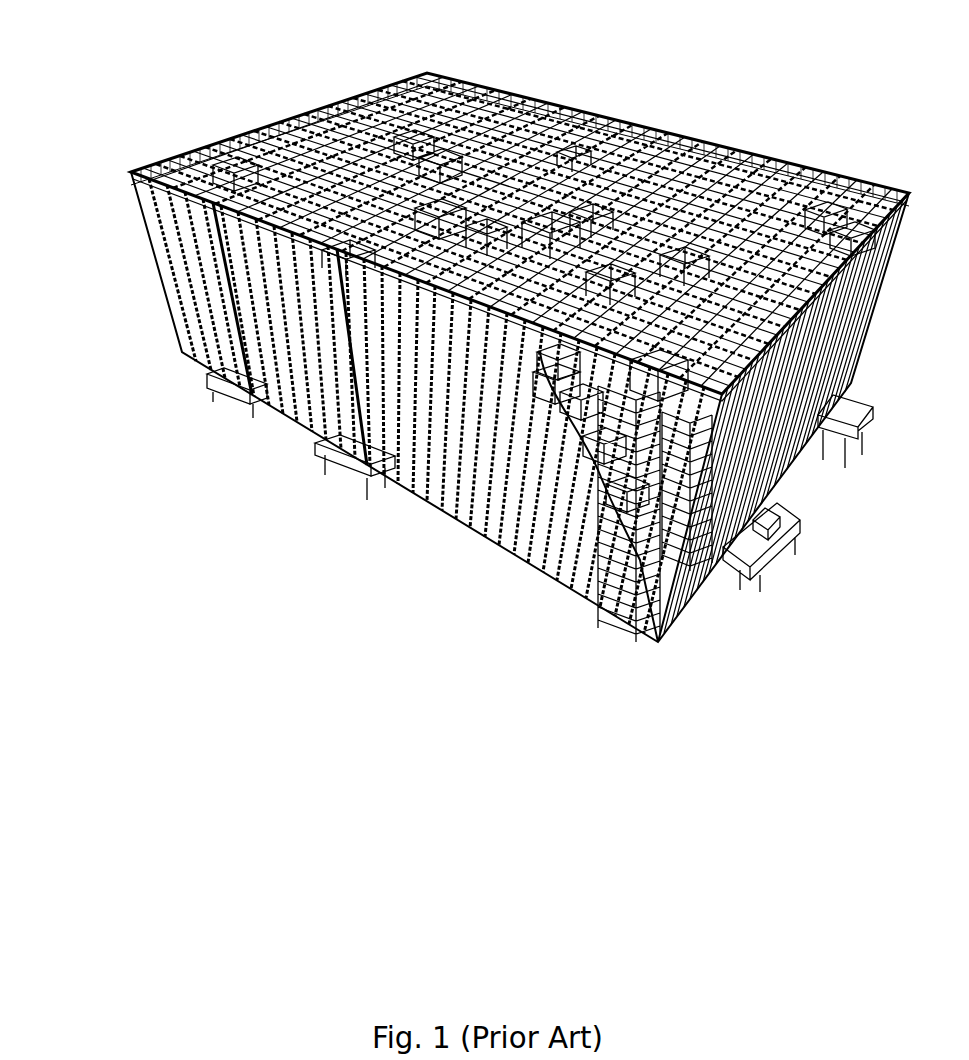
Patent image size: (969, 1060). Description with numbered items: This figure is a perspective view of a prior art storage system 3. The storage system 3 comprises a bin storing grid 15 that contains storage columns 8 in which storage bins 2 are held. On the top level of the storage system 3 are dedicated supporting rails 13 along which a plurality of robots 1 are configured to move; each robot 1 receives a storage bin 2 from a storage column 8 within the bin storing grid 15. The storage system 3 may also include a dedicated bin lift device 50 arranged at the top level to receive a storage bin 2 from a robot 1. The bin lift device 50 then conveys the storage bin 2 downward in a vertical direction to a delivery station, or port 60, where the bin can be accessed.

The storage system 3 is at (98, 90).
The bin storing grid 15 is at (107, 297).
The storage column 8 is at (406, 83).
The robot 1 is at (540, 100).
The storage bin 2 is at (650, 620).
The supporting rail 13 is at (740, 147).
The bin lift device 50 is at (330, 383).
The port 60 is at (348, 470).